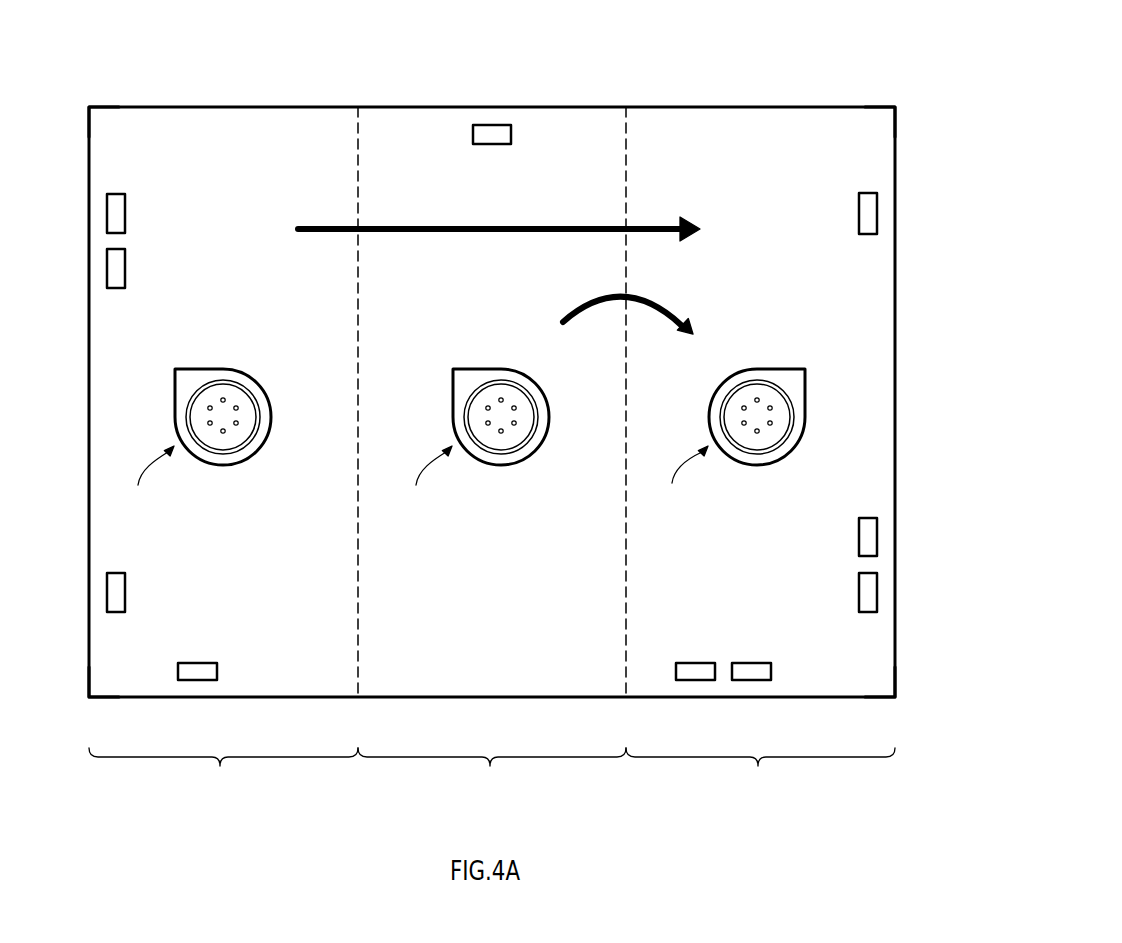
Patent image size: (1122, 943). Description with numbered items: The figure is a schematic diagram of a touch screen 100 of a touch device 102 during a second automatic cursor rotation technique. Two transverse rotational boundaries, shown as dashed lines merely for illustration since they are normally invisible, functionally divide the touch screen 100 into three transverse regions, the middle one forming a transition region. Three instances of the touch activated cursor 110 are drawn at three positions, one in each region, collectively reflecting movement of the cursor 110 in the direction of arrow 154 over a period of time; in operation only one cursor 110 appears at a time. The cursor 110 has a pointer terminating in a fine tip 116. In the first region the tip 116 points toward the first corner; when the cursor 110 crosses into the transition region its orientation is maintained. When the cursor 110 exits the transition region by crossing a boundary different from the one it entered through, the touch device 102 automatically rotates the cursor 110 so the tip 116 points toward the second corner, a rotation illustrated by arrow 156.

The touch screen 100 is at (895, 297).
The touch device 102 is at (1012, 160).
The touch activated cursor 110 is at (247, 459).
The tip 116 is at (175, 369).
The arrow 154 is at (512, 225).
The arrow 156 is at (652, 300).